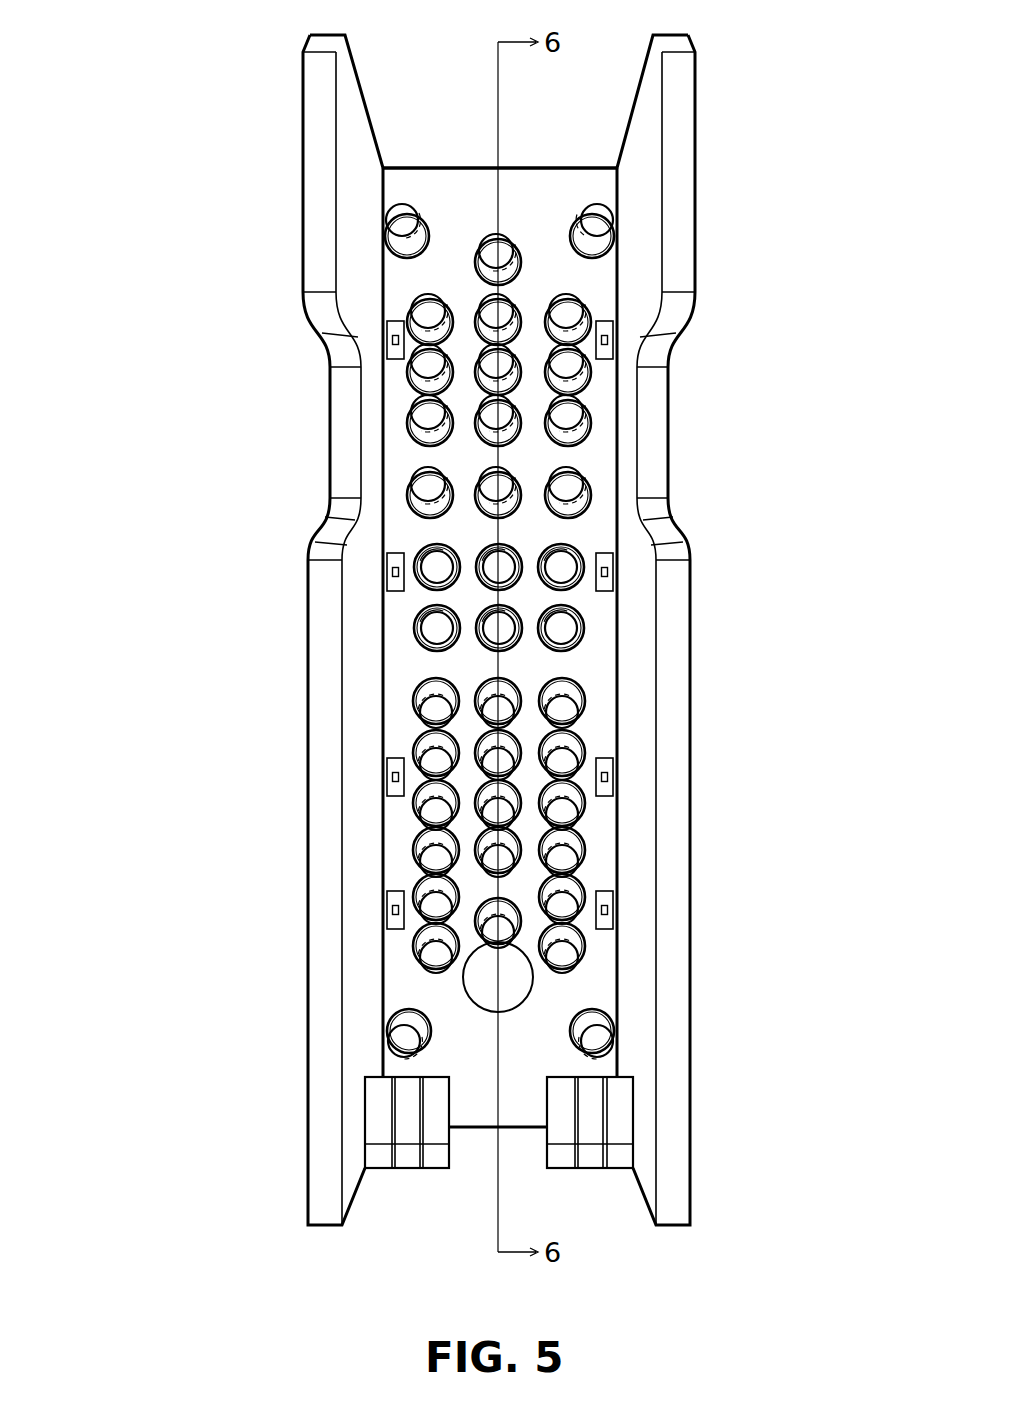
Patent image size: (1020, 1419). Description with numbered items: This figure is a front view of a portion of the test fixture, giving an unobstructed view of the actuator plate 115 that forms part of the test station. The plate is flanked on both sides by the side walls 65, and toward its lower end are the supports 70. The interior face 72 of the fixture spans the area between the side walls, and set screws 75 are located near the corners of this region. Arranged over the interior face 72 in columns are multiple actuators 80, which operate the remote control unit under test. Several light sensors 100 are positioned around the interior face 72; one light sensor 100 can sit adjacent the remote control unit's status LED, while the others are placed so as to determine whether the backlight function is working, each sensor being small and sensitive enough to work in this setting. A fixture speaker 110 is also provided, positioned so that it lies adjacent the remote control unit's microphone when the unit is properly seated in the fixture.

The side walls 65 is at (352, 643).
The supports 70 is at (433, 1105).
The interior face 72 is at (398, 185).
The set screws 75 is at (403, 220).
The actuators 80 is at (420, 873).
The light sensors 100 is at (393, 573).
The fixture speaker 110 is at (487, 983).
The actuator plate 115 is at (565, 168).